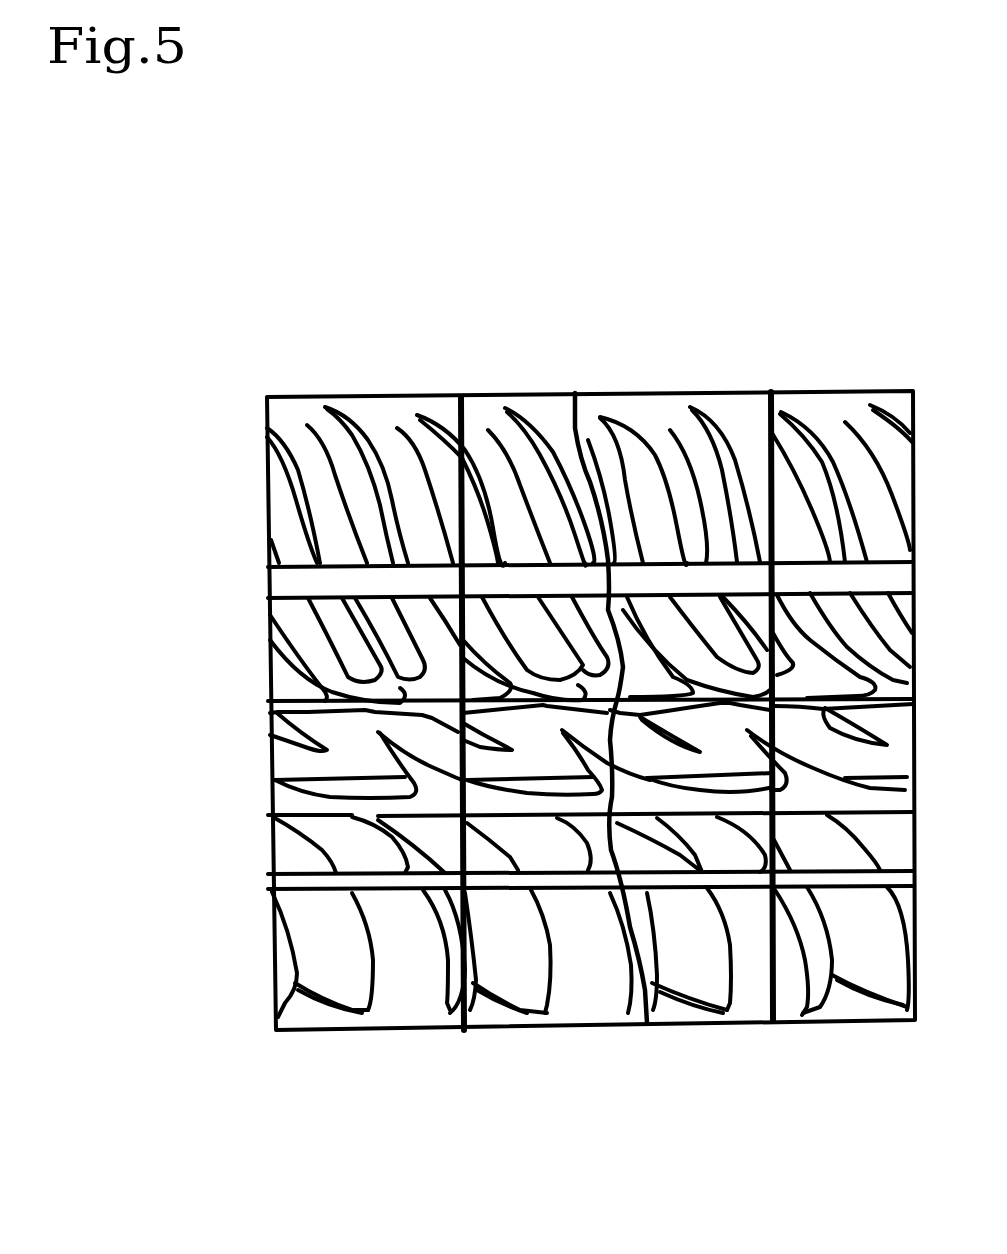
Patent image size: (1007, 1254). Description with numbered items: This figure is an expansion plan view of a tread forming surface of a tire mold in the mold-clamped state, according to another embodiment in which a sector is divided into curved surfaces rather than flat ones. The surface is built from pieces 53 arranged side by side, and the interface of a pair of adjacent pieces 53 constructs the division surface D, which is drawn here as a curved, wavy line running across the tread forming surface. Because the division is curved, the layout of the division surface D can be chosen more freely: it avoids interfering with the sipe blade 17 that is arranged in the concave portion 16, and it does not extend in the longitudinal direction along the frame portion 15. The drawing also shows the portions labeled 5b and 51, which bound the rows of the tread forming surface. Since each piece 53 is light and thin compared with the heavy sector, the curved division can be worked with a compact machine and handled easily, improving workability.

The circumferential main groove 5b is at (460, 467).
The division surface D is at (570, 410).
The sipe blade 17 is at (620, 484).
The frame portion 15 is at (268, 583).
The concave portion 16 is at (343, 837).
The shoulder land portion 51 is at (320, 1032).
The piece 53 is at (536, 1028).